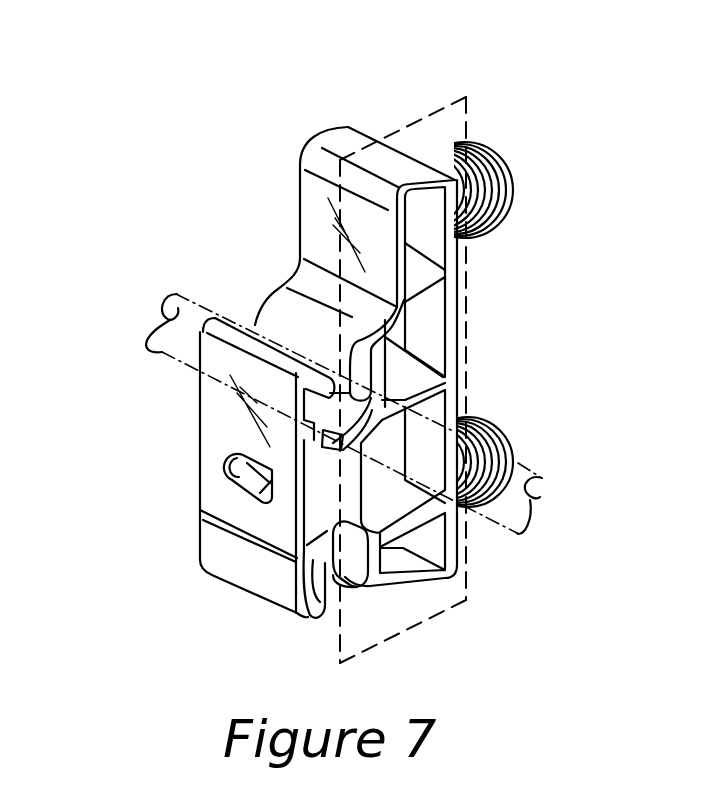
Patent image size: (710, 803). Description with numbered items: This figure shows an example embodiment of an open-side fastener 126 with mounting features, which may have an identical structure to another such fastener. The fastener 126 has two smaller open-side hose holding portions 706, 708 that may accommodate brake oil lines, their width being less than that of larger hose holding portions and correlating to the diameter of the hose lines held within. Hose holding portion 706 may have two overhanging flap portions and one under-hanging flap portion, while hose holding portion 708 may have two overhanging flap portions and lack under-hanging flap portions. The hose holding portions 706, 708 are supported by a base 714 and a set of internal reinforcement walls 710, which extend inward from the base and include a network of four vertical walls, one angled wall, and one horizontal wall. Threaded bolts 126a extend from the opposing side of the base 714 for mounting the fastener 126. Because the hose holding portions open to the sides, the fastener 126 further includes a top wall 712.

The fastener 126 is at (306, 118).
The threaded bolts 126a is at (512, 183).
The hose holding portion 706 is at (275, 316).
The hose holding portion 708 is at (333, 584).
The set of internal reinforcement walls 710 is at (438, 622).
The top wall 712 is at (227, 570).
The base 714 is at (455, 340).